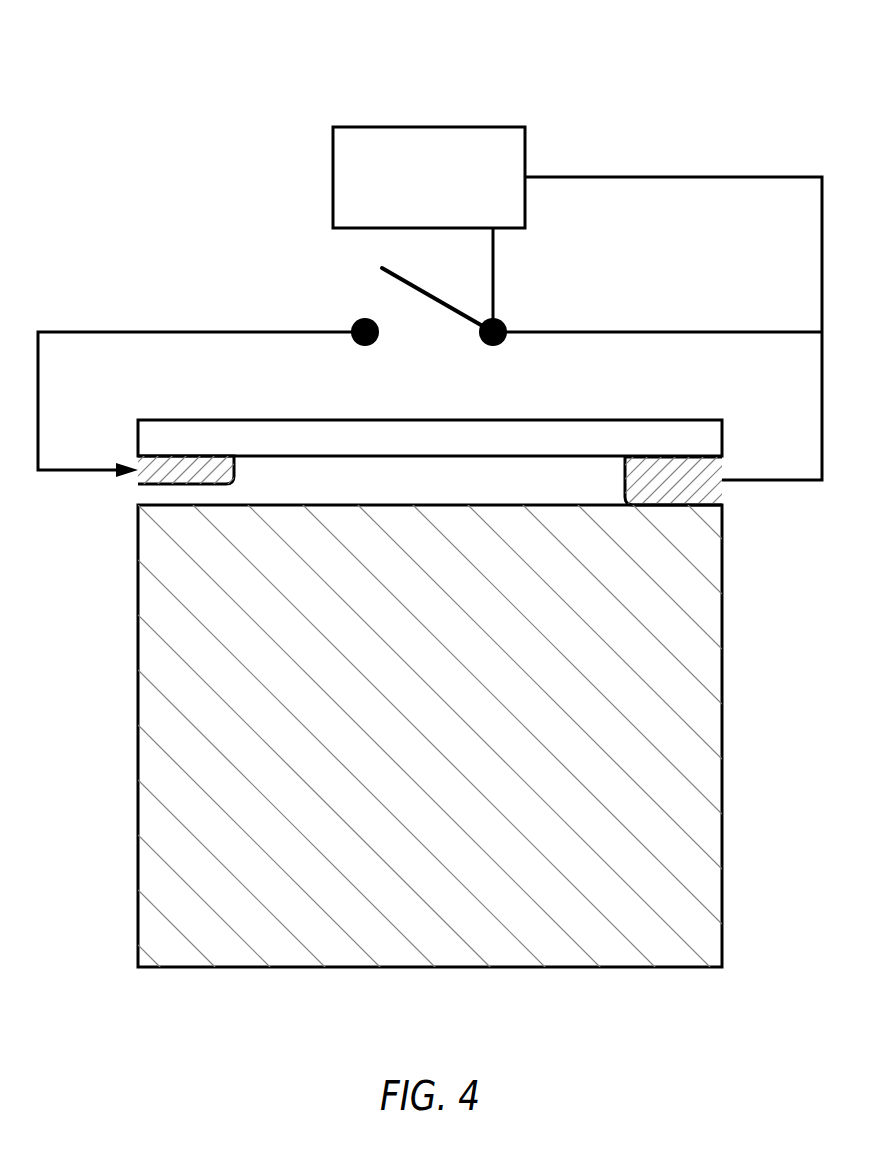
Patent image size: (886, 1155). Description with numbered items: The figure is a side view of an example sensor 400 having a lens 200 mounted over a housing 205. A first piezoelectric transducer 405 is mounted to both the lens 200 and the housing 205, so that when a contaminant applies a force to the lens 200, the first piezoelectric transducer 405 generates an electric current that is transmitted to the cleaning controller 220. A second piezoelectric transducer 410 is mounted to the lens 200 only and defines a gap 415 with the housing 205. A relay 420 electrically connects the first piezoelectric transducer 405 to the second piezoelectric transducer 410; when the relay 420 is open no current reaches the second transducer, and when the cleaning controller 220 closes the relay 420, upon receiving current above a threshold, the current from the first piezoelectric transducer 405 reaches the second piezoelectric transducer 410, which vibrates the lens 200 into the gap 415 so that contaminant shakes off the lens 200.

The sensor 400 is at (104, 62).
The cleaning controller 220 is at (496, 127).
The relay 420 is at (437, 297).
The lens 200 is at (677, 420).
The second piezoelectric transducer 410 is at (137, 463).
The gap 415 is at (145, 493).
The first piezoelectric transducer 405 is at (722, 466).
The housing 205 is at (722, 845).